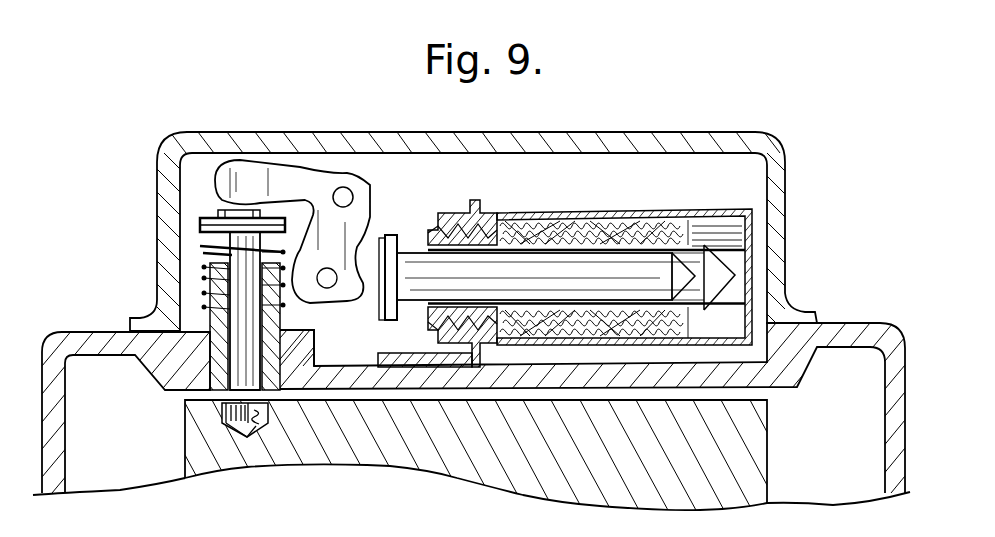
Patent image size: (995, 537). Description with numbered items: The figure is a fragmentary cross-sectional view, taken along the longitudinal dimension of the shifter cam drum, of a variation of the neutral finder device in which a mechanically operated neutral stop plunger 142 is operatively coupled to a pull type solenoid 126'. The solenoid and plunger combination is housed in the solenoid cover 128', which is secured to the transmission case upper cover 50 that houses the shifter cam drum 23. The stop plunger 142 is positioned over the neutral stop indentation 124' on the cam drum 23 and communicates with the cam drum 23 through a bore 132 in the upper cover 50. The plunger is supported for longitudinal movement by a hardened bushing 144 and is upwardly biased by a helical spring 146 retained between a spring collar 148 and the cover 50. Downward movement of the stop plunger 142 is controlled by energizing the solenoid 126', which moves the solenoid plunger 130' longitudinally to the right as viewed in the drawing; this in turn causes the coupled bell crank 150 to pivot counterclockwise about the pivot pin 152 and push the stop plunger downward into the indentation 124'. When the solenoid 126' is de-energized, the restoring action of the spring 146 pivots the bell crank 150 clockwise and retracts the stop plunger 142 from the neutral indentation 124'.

The shifter cam drum 23 is at (185, 453).
The transmission case upper cover 50 is at (890, 402).
The neutral stop indentation 124' is at (293, 423).
The pull type solenoid 126' is at (565, 265).
The solenoid cover 128' is at (473, 198).
The solenoid plunger 130' is at (557, 247).
The bore 132 is at (282, 360).
The neutral stop plunger 142 is at (200, 263).
The hardened bushing 144 is at (222, 305).
The helical spring 146 is at (232, 275).
The spring collar 148 is at (200, 227).
The bell crank 150 is at (215, 183).
The pivot pin 152 is at (338, 192).